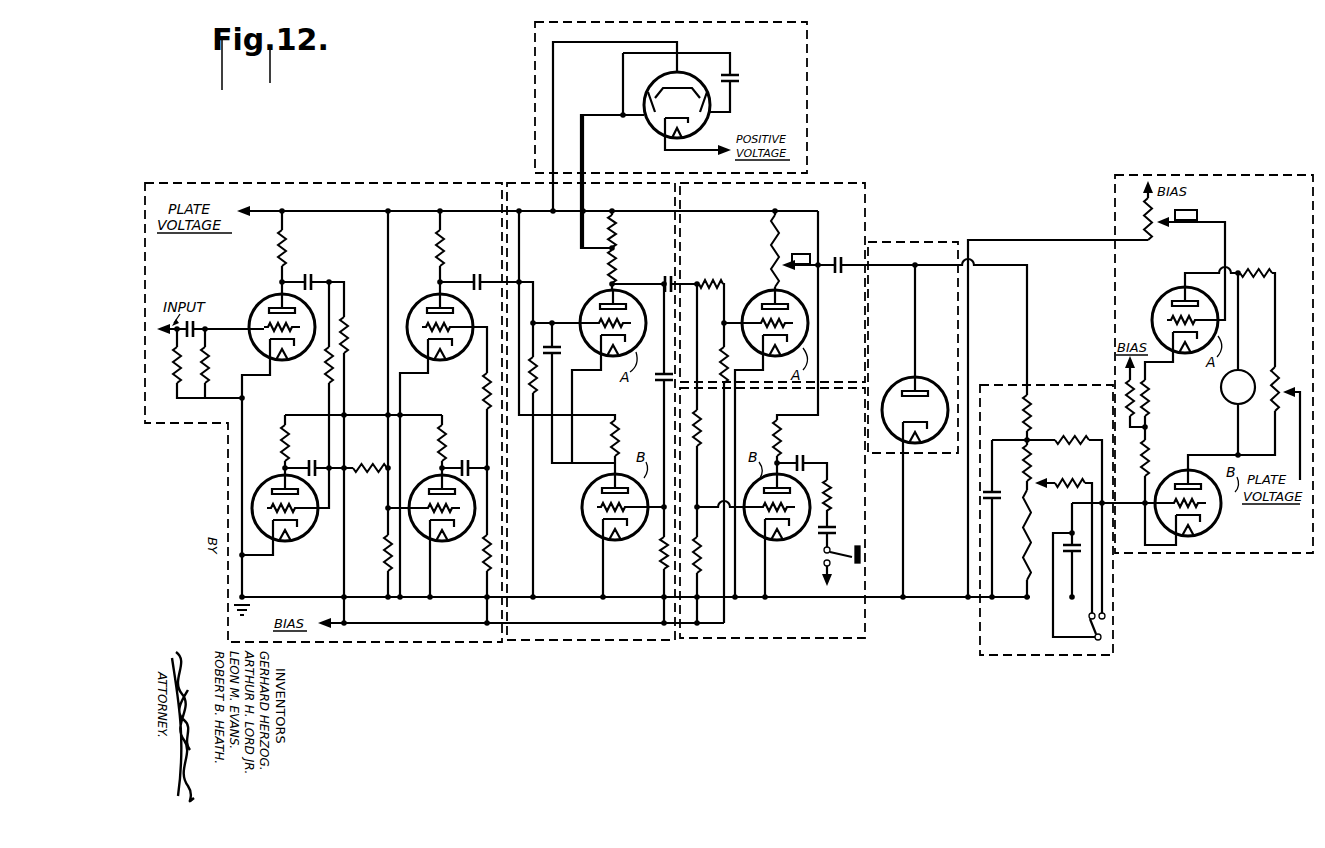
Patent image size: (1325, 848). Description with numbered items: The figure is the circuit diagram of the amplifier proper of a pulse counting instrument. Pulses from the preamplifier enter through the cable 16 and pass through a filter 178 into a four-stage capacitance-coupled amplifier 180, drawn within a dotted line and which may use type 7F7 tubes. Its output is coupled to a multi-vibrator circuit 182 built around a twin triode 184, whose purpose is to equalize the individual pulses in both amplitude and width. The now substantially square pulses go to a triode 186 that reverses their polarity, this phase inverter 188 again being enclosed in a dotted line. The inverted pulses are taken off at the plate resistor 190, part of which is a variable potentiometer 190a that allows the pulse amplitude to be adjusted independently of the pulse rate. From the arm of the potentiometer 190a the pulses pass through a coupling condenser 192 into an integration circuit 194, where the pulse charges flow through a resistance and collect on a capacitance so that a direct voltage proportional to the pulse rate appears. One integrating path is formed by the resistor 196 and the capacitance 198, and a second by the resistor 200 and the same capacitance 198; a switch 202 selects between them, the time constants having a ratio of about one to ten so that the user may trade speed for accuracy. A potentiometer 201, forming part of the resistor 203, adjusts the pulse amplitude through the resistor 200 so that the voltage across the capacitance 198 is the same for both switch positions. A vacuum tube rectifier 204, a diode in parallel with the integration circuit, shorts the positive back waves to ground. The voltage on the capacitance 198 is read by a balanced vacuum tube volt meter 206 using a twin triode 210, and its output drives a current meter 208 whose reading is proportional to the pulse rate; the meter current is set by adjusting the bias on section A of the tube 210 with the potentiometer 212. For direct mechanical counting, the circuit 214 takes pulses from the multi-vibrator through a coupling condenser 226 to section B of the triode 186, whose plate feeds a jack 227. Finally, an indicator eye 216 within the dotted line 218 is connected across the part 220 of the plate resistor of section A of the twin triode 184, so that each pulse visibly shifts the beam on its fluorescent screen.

The cable 16 is at (170, 343).
The filter 178 is at (195, 386).
The 4-stage capacitance-coupled amplifier 180 is at (323, 181).
The multi-vibrator circuit 182 is at (516, 181).
The twin triode 184 is at (640, 352).
The triode 186 is at (770, 356).
The phase inverter 188 is at (831, 180).
The plate resistor 190 is at (760, 286).
The variable potentiometer 190a is at (778, 270).
The coupling condenser 192 is at (839, 258).
The integration circuit 194 is at (1063, 385).
The resistor 196 is at (1072, 427).
The capacitance 198 is at (1078, 558).
The resistor 200 is at (1061, 472).
The potentiometer 201 is at (1021, 446).
The switch 202 is at (1106, 636).
The resistor 203 is at (1021, 574).
The vacuum tube rectifier 204 is at (909, 243).
The vacuum tube volt meter 206 is at (1216, 164).
The current meter 208 is at (1240, 371).
The tube 210 is at (1162, 300).
The potentiometer 212 is at (1140, 204).
The mechanical counter circuit 214 is at (814, 640).
The electrical indicator eye 216 is at (706, 130).
The indicator circuit 218 is at (808, 61).
The part of plate resistor 220 is at (618, 221).
The coupling condenser 226 is at (665, 276).
The jack 227 is at (856, 563).